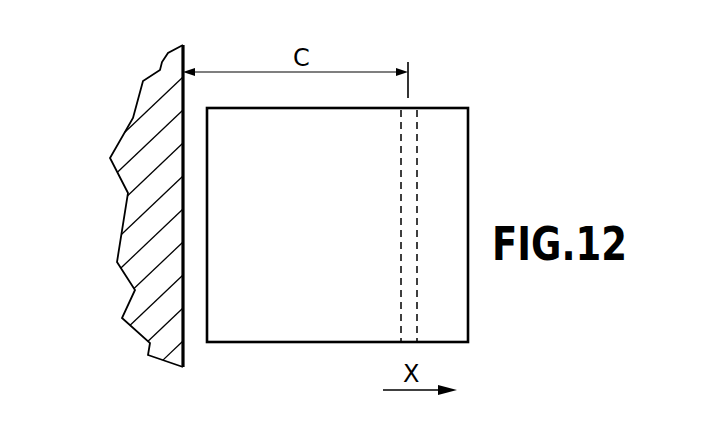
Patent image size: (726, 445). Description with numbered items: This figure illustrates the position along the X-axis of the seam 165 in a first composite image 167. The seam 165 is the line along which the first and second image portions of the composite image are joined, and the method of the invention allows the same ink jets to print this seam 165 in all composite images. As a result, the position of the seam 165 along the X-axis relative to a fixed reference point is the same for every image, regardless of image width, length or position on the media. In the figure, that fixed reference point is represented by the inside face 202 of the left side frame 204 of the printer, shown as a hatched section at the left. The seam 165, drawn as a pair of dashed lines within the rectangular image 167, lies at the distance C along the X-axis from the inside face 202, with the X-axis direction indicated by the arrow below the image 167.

The left side frame 204 is at (132, 140).
The inside face 202 is at (185, 361).
The image 167 is at (476, 121).
The seam 165 is at (401, 168).